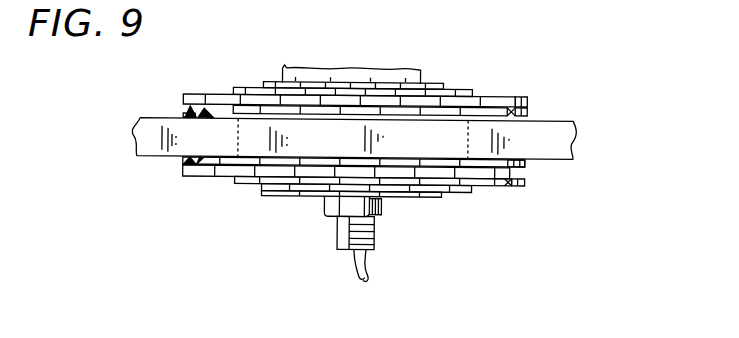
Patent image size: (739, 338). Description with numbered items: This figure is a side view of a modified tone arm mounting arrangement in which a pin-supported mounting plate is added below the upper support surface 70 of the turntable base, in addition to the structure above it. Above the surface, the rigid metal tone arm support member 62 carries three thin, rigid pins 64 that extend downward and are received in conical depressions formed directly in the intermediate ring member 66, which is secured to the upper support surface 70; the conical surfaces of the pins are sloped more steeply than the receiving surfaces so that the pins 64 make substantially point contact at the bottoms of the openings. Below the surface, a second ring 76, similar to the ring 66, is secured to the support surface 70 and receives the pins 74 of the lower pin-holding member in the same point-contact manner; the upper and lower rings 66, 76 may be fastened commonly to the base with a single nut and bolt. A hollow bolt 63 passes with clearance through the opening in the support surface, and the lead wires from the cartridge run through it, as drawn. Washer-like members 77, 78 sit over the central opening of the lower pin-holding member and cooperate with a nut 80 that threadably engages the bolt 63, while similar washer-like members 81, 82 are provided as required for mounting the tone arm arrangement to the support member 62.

The tone arm support member 62 is at (513, 102).
The hollow bolt 63 is at (338, 232).
The pins 64 is at (188, 110).
The intermediate ring member 66 is at (183, 114).
The upper support surface 70 is at (563, 148).
The pins 74 is at (183, 160).
The ring 76 is at (525, 164).
The washer-like member 77 is at (242, 184).
The washer-like member 78 is at (283, 195).
The nut 80 is at (383, 208).
The washer-like member 81 is at (240, 88).
The washer-like member 82 is at (282, 82).